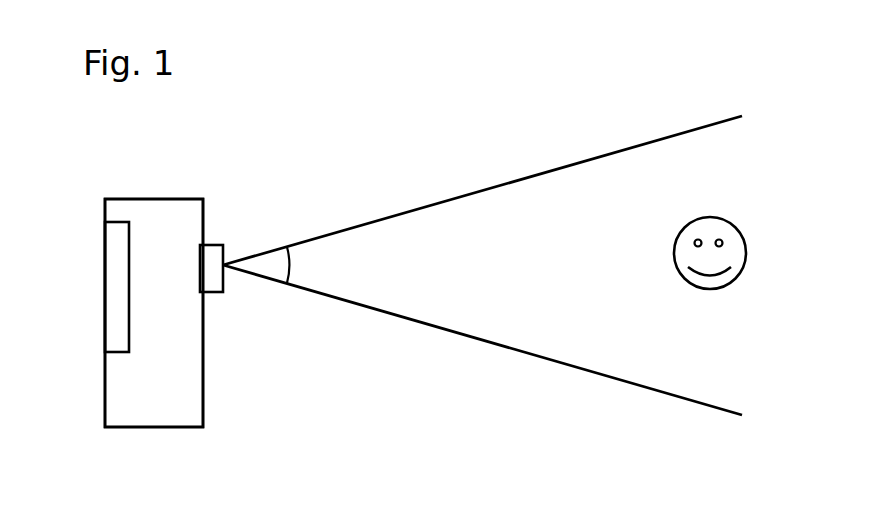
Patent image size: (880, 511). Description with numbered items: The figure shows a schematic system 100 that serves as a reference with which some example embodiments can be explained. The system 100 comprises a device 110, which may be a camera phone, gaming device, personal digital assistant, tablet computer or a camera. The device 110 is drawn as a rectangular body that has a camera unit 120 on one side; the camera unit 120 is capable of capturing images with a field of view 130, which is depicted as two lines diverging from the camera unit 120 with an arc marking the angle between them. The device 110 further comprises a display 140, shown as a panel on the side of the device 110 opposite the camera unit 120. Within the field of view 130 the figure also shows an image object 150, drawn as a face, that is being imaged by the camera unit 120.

The system 100 is at (192, 167).
The device 110 is at (203, 365).
The camera unit 120 is at (223, 293).
The field of view 130 is at (290, 247).
The display 140 is at (105, 245).
The image object 150 is at (747, 260).